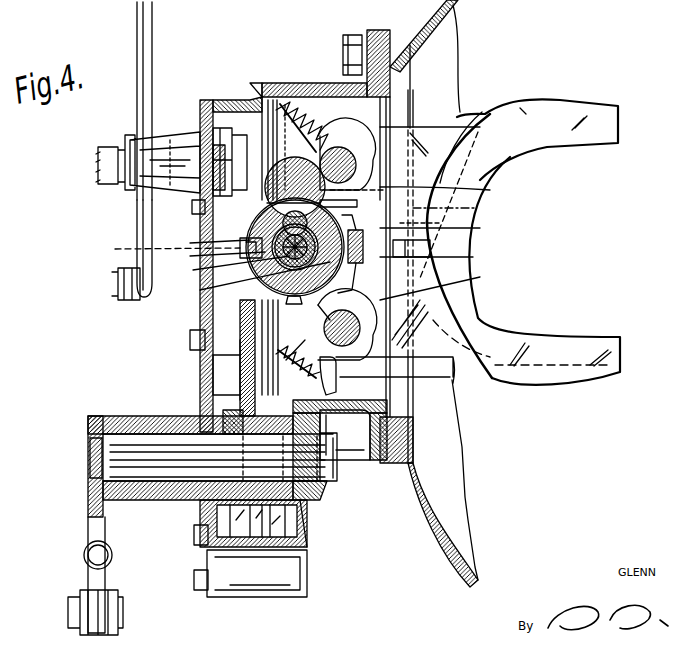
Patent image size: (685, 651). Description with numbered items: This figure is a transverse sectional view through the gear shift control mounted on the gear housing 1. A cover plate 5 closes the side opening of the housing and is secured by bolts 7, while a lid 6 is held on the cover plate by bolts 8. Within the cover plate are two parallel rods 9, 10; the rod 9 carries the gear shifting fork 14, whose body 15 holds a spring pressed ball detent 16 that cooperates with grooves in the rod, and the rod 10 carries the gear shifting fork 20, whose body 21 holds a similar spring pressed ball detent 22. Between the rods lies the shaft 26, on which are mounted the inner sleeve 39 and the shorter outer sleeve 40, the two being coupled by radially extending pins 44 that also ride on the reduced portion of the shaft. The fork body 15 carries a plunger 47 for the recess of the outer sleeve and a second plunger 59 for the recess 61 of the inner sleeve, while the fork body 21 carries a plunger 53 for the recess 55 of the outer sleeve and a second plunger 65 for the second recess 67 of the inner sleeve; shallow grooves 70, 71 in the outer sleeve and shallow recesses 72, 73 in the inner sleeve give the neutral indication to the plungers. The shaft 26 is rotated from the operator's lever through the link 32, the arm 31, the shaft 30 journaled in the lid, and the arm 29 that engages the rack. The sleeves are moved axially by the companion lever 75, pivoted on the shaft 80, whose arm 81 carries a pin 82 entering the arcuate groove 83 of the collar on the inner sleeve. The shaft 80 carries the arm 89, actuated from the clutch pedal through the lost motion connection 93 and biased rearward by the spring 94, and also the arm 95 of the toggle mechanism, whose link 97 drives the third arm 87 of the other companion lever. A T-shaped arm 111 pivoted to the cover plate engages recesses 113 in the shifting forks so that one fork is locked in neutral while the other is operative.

The gear housing 1 is at (442, 52).
The cover plate 5 is at (338, 85).
The lid 6 is at (204, 100).
The bolts 7 is at (348, 36).
The bolts 8 is at (192, 206).
The rod 9 is at (345, 148).
The rod 10 is at (352, 346).
The gear shifting fork 14 is at (478, 112).
The body of the shifting fork 15 is at (244, 110).
The spring pressed ball detent 16 is at (330, 150).
The gear shifting fork 20 is at (453, 330).
The body of the shifting fork 21 is at (240, 362).
The spring pressed ball detent 22 is at (336, 376).
The shaft 26 is at (256, 279).
The arm 29 is at (214, 98).
The shaft 30 is at (98, 172).
The arm 31 is at (130, 229).
The link 32 is at (152, 32).
The inner sleeve 39 is at (282, 300).
The outer sleeve 40 is at (262, 218).
The radially extending pins 44 is at (275, 280).
The plunger 47 is at (306, 140).
The plunger 53 is at (290, 338).
The recess 55 is at (336, 320).
The second plunger 59 is at (455, 208).
The recess 61 is at (272, 204).
The second plunger 65 is at (312, 314).
The second recess 67 is at (430, 222).
The shallow groove 70 is at (473, 257).
The shallow groove 71 is at (157, 249).
The shallow recess 72 is at (425, 248).
The shallow recess 73 is at (188, 272).
The companion lever 75 is at (240, 386).
The shaft 80 is at (108, 460).
The arm 81 is at (232, 266).
The pin 82 is at (211, 241).
The arcuate groove 83 is at (218, 254).
The third arm 87 is at (300, 530).
The arm 89 is at (92, 538).
The lost motion connection 93 is at (118, 592).
The spring 94 is at (84, 557).
The arm 95 is at (292, 505).
The link 97 is at (268, 540).
The T-shaped arm 111 is at (445, 227).
The recesses 113 is at (490, 190).